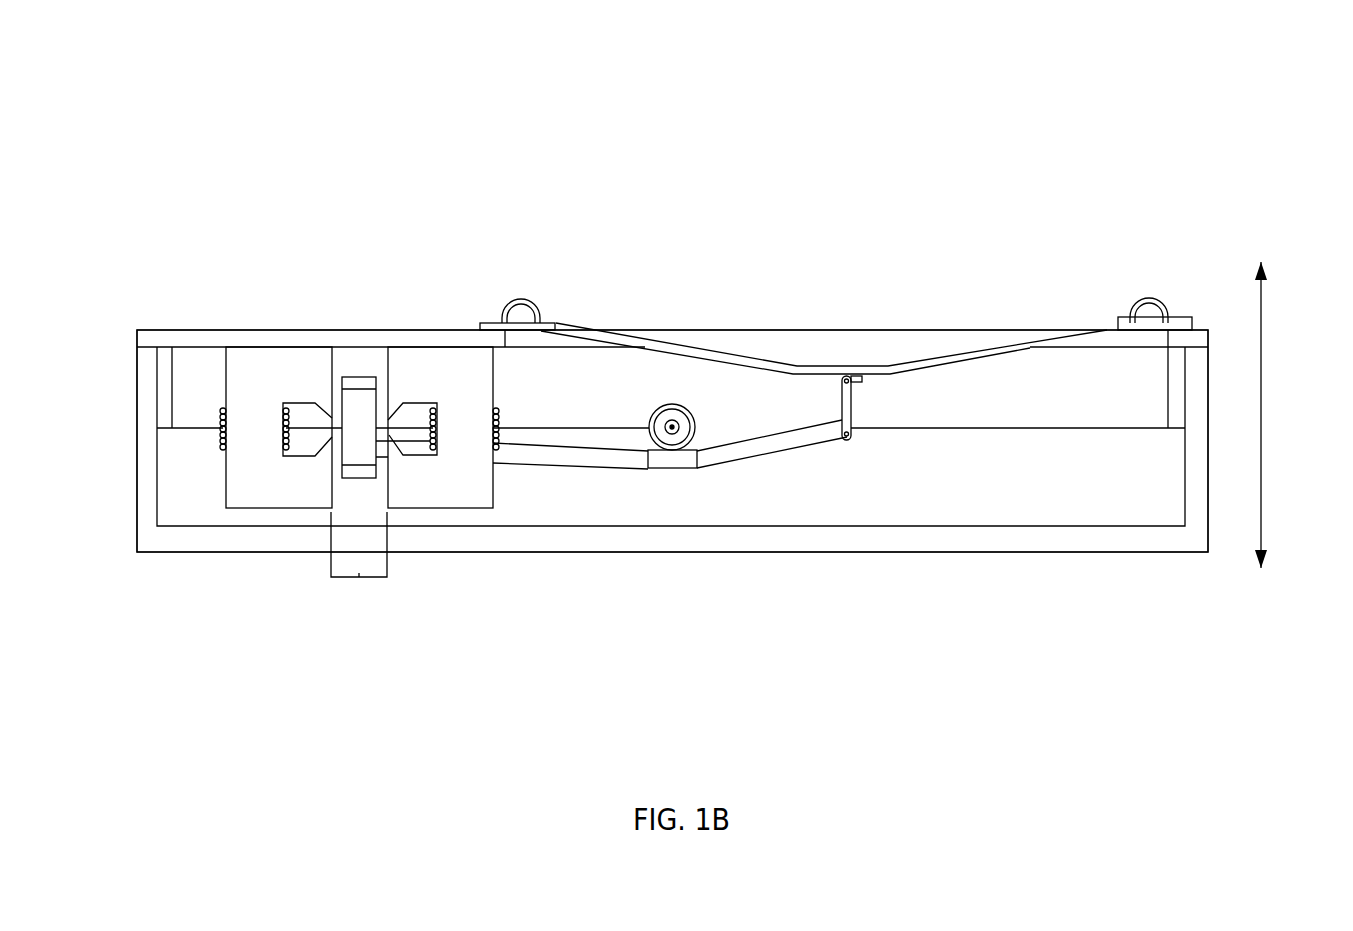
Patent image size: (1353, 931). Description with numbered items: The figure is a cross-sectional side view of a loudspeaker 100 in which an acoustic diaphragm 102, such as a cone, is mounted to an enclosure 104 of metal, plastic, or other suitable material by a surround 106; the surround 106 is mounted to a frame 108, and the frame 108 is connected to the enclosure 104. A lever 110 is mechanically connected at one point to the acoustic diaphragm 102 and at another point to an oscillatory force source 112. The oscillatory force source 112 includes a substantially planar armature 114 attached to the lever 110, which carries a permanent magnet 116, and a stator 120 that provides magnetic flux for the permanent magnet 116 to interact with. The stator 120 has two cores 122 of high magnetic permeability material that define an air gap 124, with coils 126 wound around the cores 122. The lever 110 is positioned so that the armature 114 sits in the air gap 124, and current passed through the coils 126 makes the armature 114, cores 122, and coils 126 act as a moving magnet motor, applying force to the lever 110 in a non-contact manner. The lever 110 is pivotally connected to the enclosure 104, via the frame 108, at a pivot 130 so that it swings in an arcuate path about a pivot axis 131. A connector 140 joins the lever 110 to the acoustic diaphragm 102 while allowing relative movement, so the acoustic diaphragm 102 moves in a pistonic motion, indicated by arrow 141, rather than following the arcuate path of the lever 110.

The loudspeaker 100 is at (342, 150).
The acoustic diaphragm 102 is at (711, 350).
The enclosure 104 is at (918, 552).
The surround 106 is at (521, 299).
The frame 108 is at (138, 340).
The lever 110 is at (749, 464).
The oscillatory force source 112 is at (200, 496).
The armature 114 is at (368, 377).
The permanent magnet 116 is at (358, 387).
The stator 120 is at (262, 344).
The cores 122 is at (252, 510).
The air gap 124 is at (359, 558).
The coils 126 is at (222, 441).
The pivot 130 is at (668, 390).
The pivot axis 131 is at (672, 427).
The connector 140 is at (851, 407).
The arrow 141 is at (1275, 425).